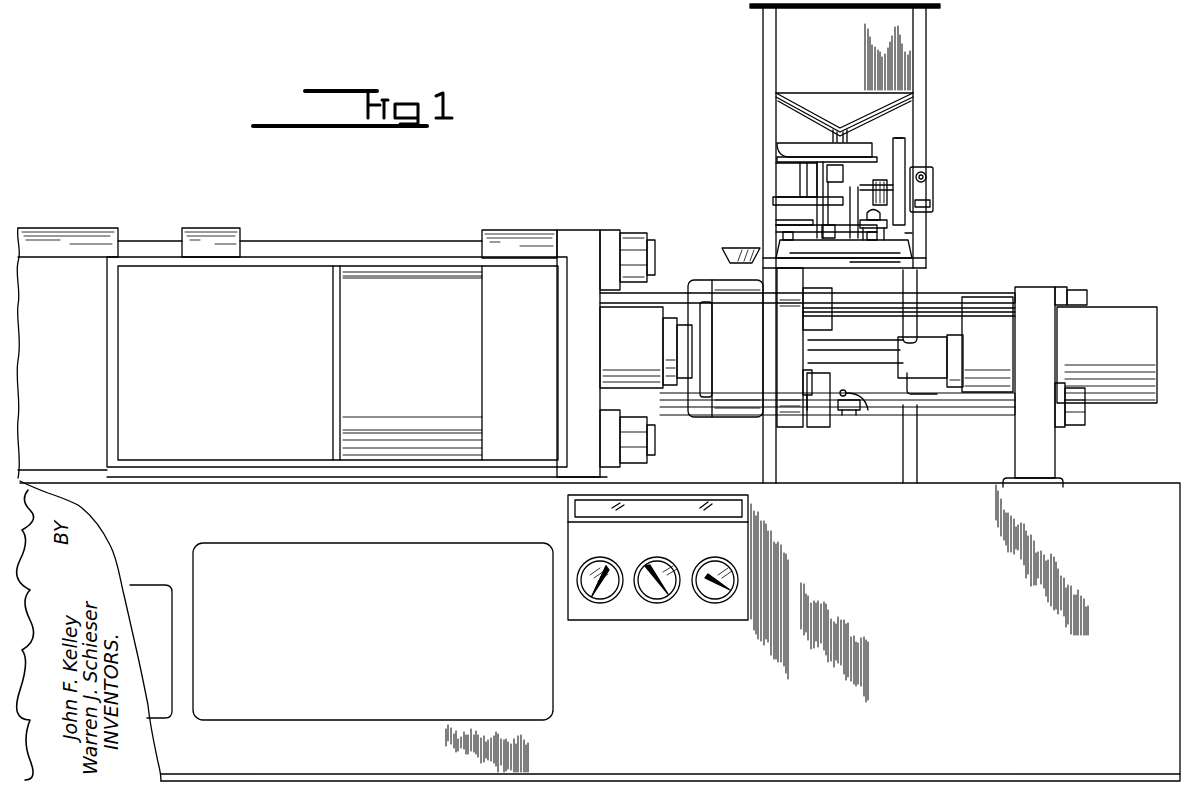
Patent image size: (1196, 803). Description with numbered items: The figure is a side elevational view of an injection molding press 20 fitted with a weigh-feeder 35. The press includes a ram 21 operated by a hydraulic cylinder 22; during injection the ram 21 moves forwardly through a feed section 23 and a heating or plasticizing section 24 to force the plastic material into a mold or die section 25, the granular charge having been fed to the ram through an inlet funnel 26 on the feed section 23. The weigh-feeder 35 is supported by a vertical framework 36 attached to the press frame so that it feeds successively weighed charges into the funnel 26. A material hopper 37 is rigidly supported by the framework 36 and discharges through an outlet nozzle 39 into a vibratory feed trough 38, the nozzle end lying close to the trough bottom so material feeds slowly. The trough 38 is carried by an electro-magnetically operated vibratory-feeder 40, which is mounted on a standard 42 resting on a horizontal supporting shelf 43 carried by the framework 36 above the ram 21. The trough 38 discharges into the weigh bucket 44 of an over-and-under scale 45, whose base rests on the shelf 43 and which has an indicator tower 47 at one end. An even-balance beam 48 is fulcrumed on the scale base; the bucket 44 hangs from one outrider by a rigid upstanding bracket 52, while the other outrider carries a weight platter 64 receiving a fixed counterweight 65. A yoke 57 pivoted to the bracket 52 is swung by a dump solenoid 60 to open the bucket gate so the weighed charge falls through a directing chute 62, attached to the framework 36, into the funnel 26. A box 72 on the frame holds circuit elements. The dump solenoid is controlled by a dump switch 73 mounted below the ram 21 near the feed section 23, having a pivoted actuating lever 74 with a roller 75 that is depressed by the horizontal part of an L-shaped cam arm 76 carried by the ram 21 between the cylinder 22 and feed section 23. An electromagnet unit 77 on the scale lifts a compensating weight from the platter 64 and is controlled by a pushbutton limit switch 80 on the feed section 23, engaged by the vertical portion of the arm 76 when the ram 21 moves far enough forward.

The press 20 is at (536, 226).
The ram 21 is at (832, 345).
The hydraulic cylinder 22 is at (1095, 312).
The feed section 23 is at (729, 308).
The heating or plasticizing section 24 is at (638, 360).
The mold or die section 25 is at (505, 348).
The inlet funnel 26 is at (735, 250).
The weigh-feeder 35 is at (898, 127).
The vertical framework 36 is at (925, 43).
The material hopper 37 is at (815, 101).
The vibratory feed trough 38 is at (782, 142).
The outlet nozzle 39 is at (835, 135).
The vibratory-feeder 40 is at (875, 182).
The standard 42 is at (880, 180).
The horizontal supporting shelf 43 is at (890, 253).
The weigh bucket 44 is at (782, 172).
The scale 45 is at (858, 250).
The indicator tower 47 is at (900, 138).
The even-balance beam 48 is at (807, 225).
The upstanding bracket 52 is at (778, 222).
The yoke 57 is at (778, 198).
The dump solenoid 60 is at (828, 170).
The directing chute 62 is at (762, 240).
The weight platter 64 is at (880, 216).
The counterweight 65 is at (870, 228).
The box 72 is at (935, 197).
The dump switch 73 is at (848, 414).
The actuating lever 74 is at (862, 400).
The roller 75 is at (847, 392).
The L-shaped cam arm 76 is at (935, 396).
The electromagnet unit 77 is at (927, 177).
The pushbutton limit switch 80 is at (810, 396).